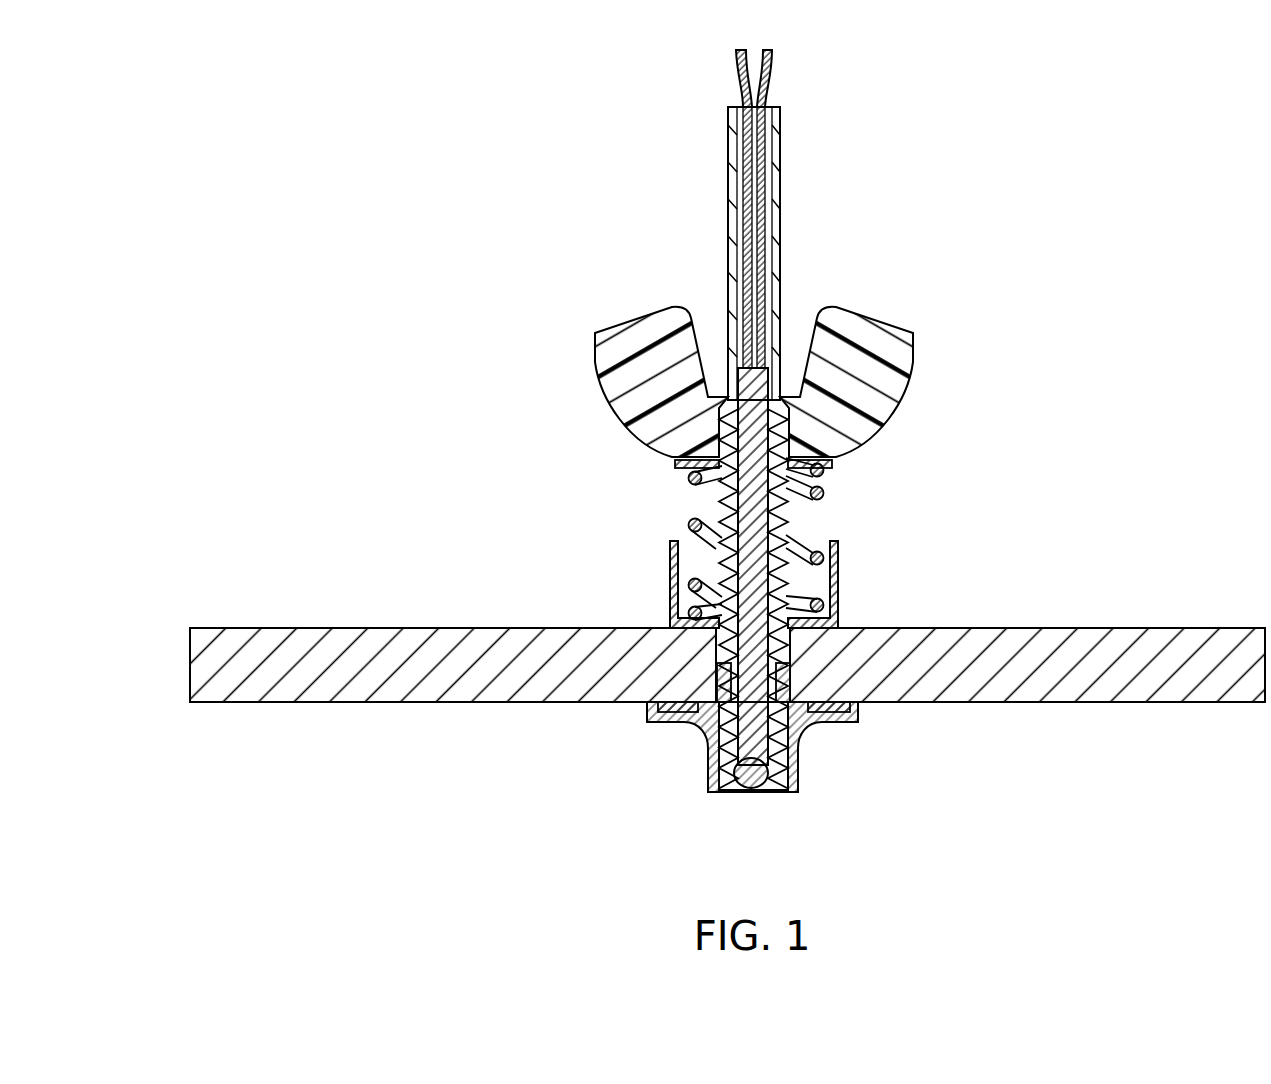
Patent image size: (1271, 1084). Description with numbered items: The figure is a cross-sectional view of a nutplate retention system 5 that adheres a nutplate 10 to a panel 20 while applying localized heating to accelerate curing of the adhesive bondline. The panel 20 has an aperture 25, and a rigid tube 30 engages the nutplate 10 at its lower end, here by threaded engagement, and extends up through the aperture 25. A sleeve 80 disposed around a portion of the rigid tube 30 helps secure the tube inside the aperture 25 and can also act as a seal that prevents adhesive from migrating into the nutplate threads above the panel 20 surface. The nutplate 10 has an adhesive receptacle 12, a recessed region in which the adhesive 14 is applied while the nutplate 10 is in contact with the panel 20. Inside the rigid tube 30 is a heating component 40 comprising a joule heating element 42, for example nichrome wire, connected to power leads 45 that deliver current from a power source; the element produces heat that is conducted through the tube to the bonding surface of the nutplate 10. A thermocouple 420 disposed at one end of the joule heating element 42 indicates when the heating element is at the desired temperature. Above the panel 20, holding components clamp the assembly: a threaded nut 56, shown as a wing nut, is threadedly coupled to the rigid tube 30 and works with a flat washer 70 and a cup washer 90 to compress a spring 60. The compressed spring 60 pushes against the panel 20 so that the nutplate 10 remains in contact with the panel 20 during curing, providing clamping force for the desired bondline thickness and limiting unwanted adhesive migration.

The nutplate retention system 5 is at (1074, 262).
The nutplate 10 is at (711, 732).
The adhesive receptacle 12 is at (652, 718).
The adhesive 14 is at (824, 712).
The panel 20 is at (1084, 640).
The aperture 25 is at (800, 666).
The rigid tube 30 is at (796, 534).
The heating component 40 is at (795, 398).
The joule heating element 42 is at (758, 421).
The power leads 45 is at (765, 73).
The threaded nut 56 is at (905, 356).
The spring 60 is at (827, 495).
The flat washer 70 is at (681, 463).
The sleeve 80 is at (729, 676).
The cup washer 90 is at (676, 590).
The thermocouple 420 is at (756, 789).